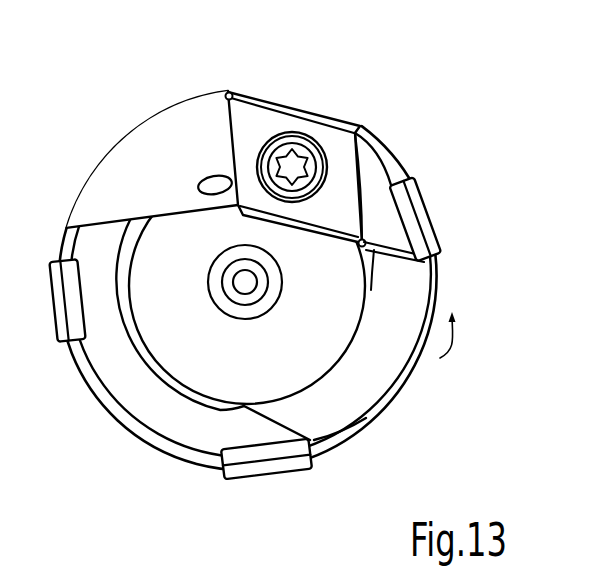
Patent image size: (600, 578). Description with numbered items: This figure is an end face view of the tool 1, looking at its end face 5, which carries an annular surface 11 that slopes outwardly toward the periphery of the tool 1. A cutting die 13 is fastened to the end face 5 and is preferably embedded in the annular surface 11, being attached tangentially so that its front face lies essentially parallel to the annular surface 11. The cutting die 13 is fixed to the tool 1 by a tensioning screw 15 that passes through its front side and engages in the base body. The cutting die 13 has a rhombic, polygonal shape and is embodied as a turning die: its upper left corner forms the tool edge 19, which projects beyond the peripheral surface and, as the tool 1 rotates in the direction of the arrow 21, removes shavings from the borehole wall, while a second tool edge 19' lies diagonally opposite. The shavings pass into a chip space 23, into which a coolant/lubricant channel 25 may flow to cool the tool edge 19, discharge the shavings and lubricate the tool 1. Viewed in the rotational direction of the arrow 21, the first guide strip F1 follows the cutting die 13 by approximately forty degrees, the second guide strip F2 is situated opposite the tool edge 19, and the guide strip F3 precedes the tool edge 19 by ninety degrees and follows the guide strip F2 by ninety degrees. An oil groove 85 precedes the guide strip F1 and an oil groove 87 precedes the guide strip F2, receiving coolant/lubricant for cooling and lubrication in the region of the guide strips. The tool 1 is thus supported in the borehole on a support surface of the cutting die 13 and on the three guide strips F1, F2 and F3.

The tool 1 is at (113, 138).
The end face 5 is at (173, 296).
The annular surface 11 is at (152, 402).
The cutting die 13 is at (267, 89).
The tensioning screw 15 is at (323, 153).
The tool edge 19 is at (252, 59).
The second tool edge 19' is at (437, 267).
The arrow 21 is at (447, 353).
The chip space 23 is at (165, 176).
The coolant/lubricant channel 25 is at (203, 173).
The oil groove 85 is at (383, 140).
The oil groove 87 is at (347, 440).
The first guide strip F1 is at (437, 217).
The second guide strip F2 is at (293, 470).
The guide strip F3 is at (50, 308).